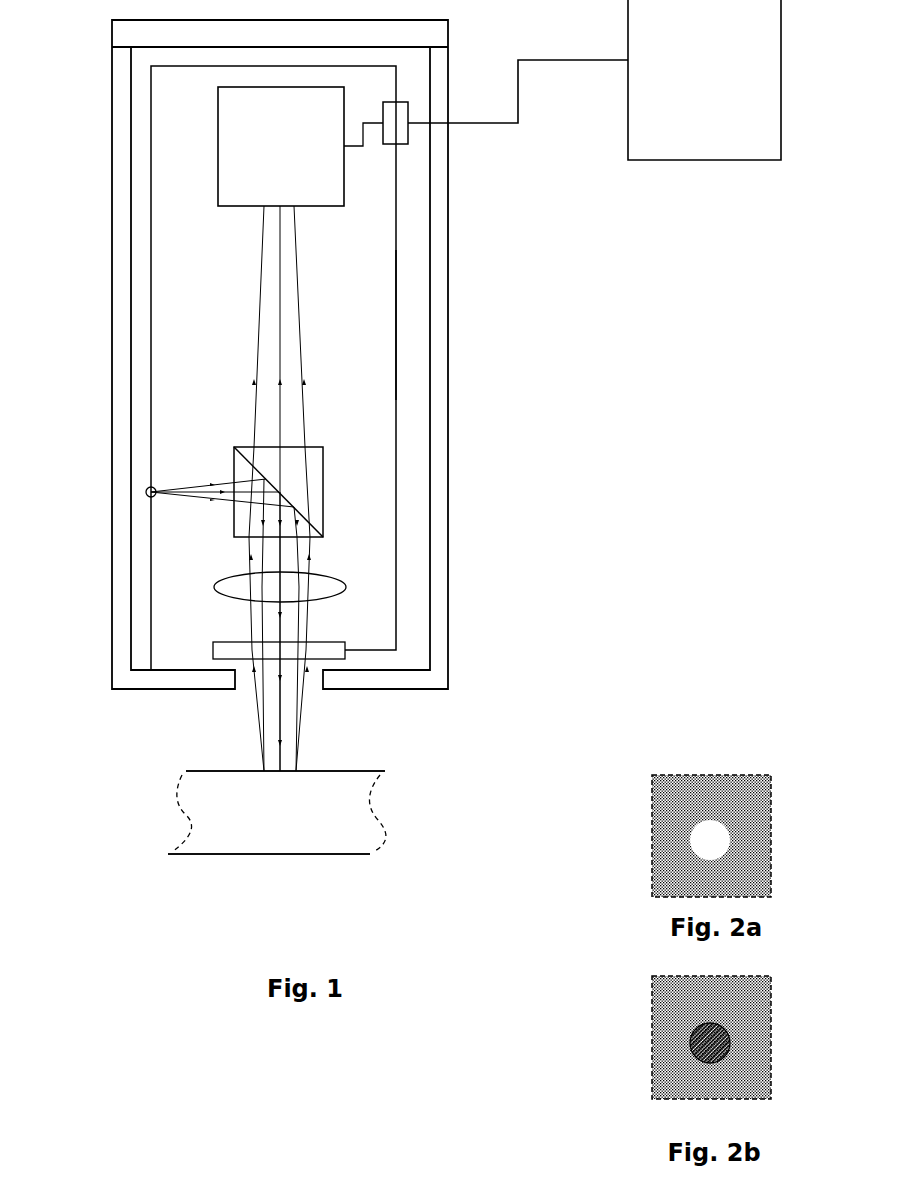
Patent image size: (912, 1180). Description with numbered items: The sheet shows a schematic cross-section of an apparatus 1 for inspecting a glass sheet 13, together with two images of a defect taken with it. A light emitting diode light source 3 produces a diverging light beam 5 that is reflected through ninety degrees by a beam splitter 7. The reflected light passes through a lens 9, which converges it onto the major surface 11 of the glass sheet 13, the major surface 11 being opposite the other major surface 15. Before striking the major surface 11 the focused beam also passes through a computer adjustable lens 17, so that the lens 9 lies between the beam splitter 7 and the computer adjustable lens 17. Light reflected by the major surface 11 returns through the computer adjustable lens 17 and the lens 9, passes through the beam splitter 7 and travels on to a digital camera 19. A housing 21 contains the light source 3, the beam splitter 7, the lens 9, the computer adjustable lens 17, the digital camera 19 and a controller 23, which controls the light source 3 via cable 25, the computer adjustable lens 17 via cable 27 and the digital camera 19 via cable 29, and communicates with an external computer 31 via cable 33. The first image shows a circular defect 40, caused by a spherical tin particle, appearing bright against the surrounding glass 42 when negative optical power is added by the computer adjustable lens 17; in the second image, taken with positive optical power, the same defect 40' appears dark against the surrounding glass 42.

In FIG. 1, the apparatus 1 is at (483, 607).
In FIG. 1, the light emitting diode light source 3 is at (160, 500).
In FIG. 1, the diverging light beam 5 is at (189, 462).
In FIG. 1, the beam splitter 7 is at (317, 457).
In FIG. 1, the lens 9 is at (322, 582).
In FIG. 1, the major surface 11 is at (345, 758).
In FIG. 1, the glass sheet 13 is at (342, 820).
In FIG. 1, the major surface 15 is at (313, 870).
In FIG. 1, the computer adjustable lens 17 is at (230, 650).
In FIG. 1, the digital camera 19 is at (242, 190).
In FIG. 1, the housing 21 is at (448, 340).
In FIG. 1, the controller 23 is at (393, 135).
In FIG. 1, the cable 25 is at (151, 213).
In FIG. 1, the cable 27 is at (395, 295).
In FIG. 1, the cable 29 is at (379, 123).
In FIG. 1, the computer 31 is at (697, 145).
In FIG. 1, the cable 33 is at (560, 62).
In FIG. 2A, the defect 40 is at (658, 848).
In FIG. 2B, the defect 40' is at (754, 1015).
In FIG. 2A, the glass 42 is at (745, 813).
In FIG. 2B, the glass 42 is at (663, 1038).